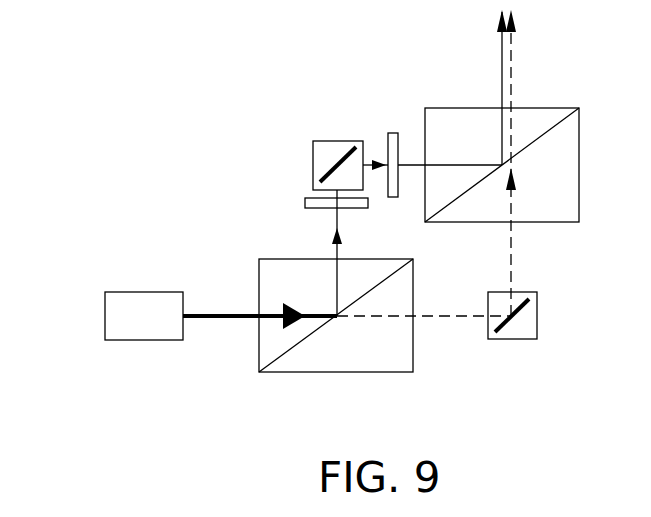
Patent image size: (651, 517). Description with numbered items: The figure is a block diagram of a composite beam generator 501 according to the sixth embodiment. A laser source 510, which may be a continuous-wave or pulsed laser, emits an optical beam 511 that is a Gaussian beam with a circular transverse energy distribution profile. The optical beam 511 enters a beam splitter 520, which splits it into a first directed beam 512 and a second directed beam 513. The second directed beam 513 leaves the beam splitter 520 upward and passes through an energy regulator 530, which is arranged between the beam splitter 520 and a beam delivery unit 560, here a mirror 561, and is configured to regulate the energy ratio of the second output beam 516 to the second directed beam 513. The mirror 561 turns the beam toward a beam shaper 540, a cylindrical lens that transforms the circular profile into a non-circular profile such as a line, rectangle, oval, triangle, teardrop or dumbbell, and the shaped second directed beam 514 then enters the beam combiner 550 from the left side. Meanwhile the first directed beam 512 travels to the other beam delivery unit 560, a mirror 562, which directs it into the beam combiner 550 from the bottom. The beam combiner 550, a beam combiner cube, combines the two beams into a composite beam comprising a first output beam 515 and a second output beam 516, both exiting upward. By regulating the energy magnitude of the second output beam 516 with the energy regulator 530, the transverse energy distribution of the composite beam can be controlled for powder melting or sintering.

The composite beam generator 501 is at (124, 77).
The laser source 510 is at (105, 315).
The optical beam 511 is at (227, 312).
The beam splitter 520 is at (345, 372).
The first directed beam 512 is at (443, 317).
The second directed beam 513 is at (337, 222).
The energy regulator 530 is at (305, 203).
The beam delivery unit 560 is at (313, 158).
The mirror 561 is at (346, 148).
The mirror 562 is at (517, 312).
The second directed beam 514 is at (412, 165).
The beam shaper 540 is at (390, 133).
The beam combiner 550 is at (579, 163).
The first output beam 515 is at (513, 62).
The second output beam 516 is at (502, 62).